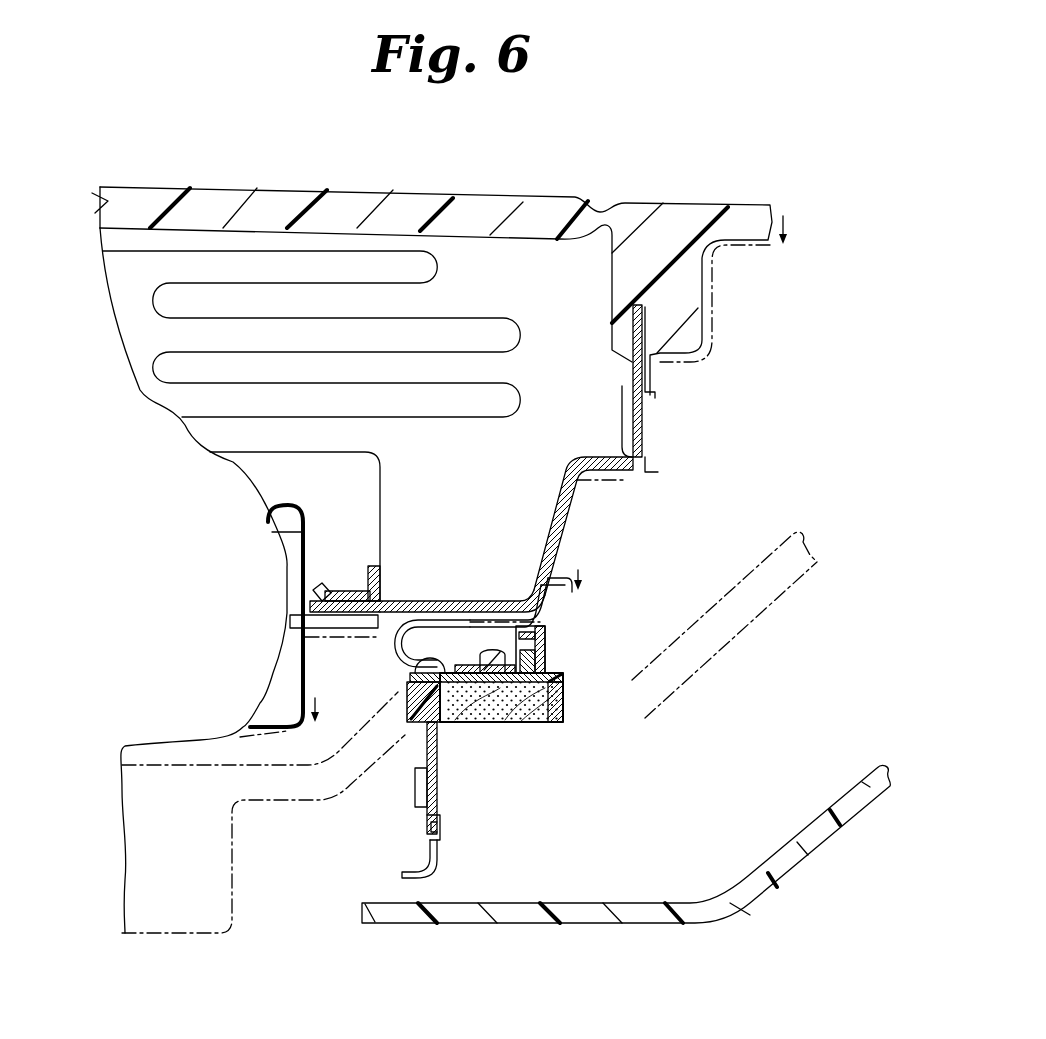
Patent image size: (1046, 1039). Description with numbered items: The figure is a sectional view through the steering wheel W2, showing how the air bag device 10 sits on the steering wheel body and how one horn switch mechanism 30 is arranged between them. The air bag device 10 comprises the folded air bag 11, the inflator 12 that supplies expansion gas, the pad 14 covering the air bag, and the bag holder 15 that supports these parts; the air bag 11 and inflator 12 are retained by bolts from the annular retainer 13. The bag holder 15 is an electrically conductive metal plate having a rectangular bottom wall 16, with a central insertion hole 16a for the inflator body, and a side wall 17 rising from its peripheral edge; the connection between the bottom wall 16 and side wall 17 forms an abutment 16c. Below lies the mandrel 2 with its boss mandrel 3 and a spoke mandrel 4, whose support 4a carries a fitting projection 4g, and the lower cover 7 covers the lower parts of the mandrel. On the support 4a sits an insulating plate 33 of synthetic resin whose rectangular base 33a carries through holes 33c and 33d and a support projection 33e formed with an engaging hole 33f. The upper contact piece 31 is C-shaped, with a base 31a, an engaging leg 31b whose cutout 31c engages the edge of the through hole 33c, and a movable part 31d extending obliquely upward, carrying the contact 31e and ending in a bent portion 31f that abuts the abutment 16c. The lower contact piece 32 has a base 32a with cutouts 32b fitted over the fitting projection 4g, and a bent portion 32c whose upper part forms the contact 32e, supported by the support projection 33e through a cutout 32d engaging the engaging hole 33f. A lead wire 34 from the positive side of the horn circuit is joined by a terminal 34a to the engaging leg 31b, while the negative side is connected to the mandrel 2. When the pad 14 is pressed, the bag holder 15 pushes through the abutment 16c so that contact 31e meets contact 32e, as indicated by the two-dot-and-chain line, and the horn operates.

The steering wheel W2 is at (409, 560).
The pad 14 is at (100, 212).
The air bag 11 is at (165, 300).
The air bag device 10 is at (146, 485).
The inflator 12 is at (280, 546).
The annular retainer 13 is at (347, 590).
The bag holder 15 is at (413, 580).
The bottom wall 16 is at (420, 547).
The insertion hole 16a is at (305, 606).
The abutment 16c is at (528, 576).
The side wall 17 is at (622, 440).
The upper contact piece 31 is at (431, 685).
The base 31a is at (410, 680).
The engaging leg 31b is at (436, 755).
The cutout 31c is at (418, 790).
The movable part 31d is at (395, 641).
The contact 31e is at (490, 618).
The bent portion 31f is at (570, 577).
The horn switch mechanism 30 is at (559, 737).
The lower contact piece 32 is at (599, 643).
The contact 32e is at (545, 632).
The base 32a is at (556, 722).
The cutout 32b is at (498, 722).
The bent portion 32c is at (532, 652).
The cutout 32d is at (570, 722).
The insulating plate 33 is at (589, 700).
The base 33a is at (563, 700).
The through hole 33c is at (412, 724).
The through hole 33d is at (470, 722).
The support projection 33e is at (540, 672).
The engaging hole 33f is at (590, 722).
The lead wire 34 is at (432, 872).
The terminal 34a is at (428, 830).
The spoke mandrel 4 is at (668, 682).
The support 4a is at (566, 732).
The fitting projection 4g is at (540, 722).
The lower cover 7 is at (755, 908).
The mandrel 2 is at (263, 846).
The boss mandrel 3 is at (178, 940).